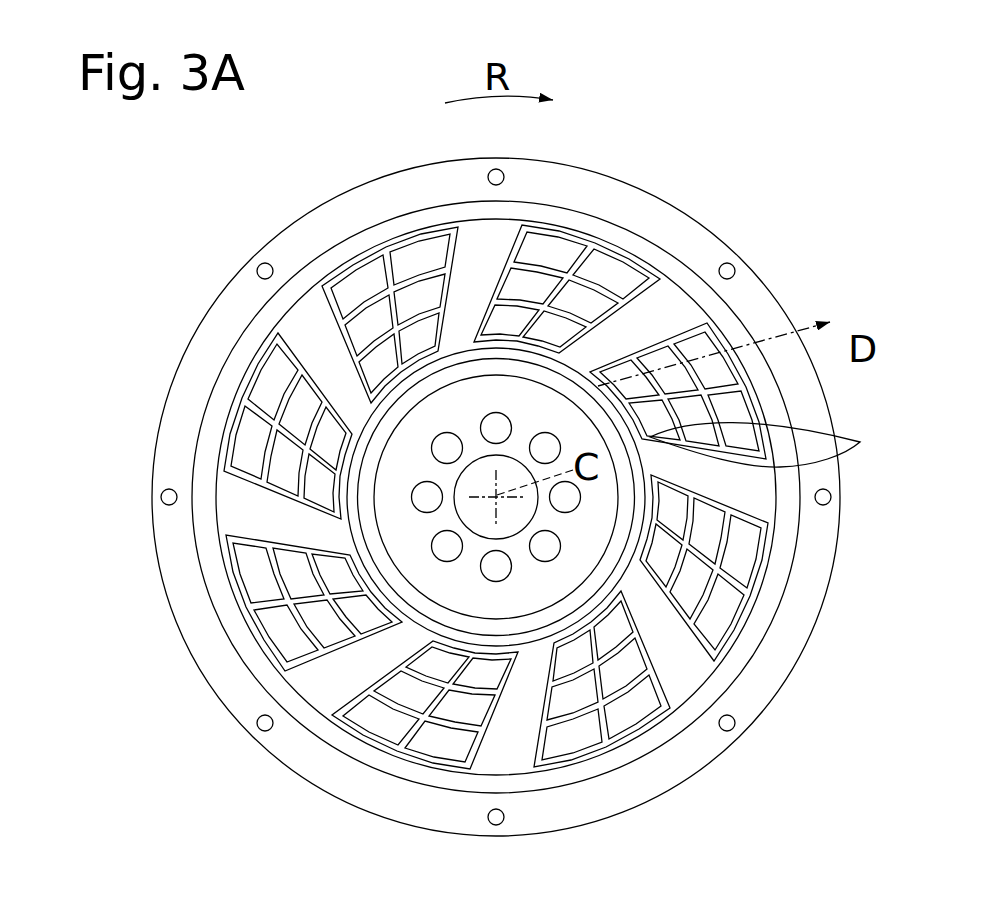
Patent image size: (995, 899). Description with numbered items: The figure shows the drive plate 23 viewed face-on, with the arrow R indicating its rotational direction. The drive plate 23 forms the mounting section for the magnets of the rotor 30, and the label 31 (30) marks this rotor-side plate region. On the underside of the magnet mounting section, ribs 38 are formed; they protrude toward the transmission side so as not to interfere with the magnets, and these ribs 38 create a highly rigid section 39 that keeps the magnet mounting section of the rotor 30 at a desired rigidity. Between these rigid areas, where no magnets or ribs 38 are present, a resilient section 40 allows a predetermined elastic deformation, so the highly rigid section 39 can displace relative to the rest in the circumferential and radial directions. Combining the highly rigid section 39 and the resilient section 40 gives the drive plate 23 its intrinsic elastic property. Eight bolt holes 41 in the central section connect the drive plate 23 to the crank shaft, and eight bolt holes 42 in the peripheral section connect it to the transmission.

The drive plate 23 is at (705, 139).
The rotor 30 is at (496, 479).
The blade plate 31 is at (677, 293).
The rib 38 is at (858, 442).
The highly rigid section 39 is at (616, 252).
The resilient section 40 is at (697, 318).
The bolt hole 41 is at (560, 545).
The bolt hole 42 is at (495, 169).